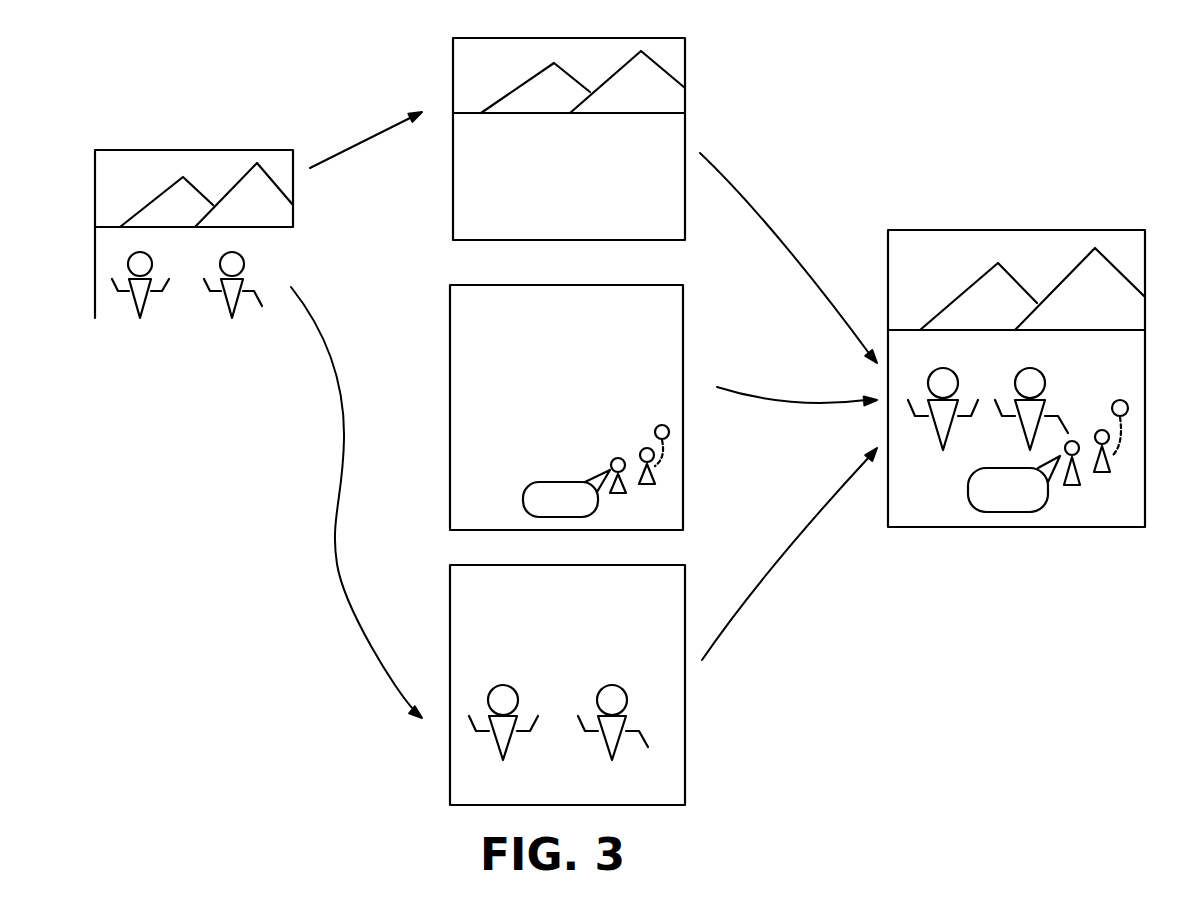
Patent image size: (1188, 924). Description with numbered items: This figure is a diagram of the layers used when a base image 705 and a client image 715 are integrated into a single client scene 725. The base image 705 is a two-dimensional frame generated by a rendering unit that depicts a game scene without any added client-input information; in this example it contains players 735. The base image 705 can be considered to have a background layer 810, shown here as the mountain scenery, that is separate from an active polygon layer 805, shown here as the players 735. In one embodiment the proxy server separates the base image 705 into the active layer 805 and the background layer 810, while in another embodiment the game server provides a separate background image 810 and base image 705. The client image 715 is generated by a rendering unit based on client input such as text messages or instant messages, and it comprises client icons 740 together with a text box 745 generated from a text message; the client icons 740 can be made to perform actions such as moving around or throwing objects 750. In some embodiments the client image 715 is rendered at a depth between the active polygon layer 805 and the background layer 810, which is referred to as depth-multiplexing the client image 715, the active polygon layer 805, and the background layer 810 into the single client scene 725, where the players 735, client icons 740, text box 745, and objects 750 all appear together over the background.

The base image 705 is at (250, 142).
The background layer 810 is at (708, 125).
The client image 715 is at (511, 333).
The active polygon layer 805 is at (428, 619).
The client scene 725 is at (1083, 222).
The players 735 is at (210, 308).
The client icons 740 is at (631, 441).
The text box 745 is at (545, 511).
The objects 750 is at (662, 418).